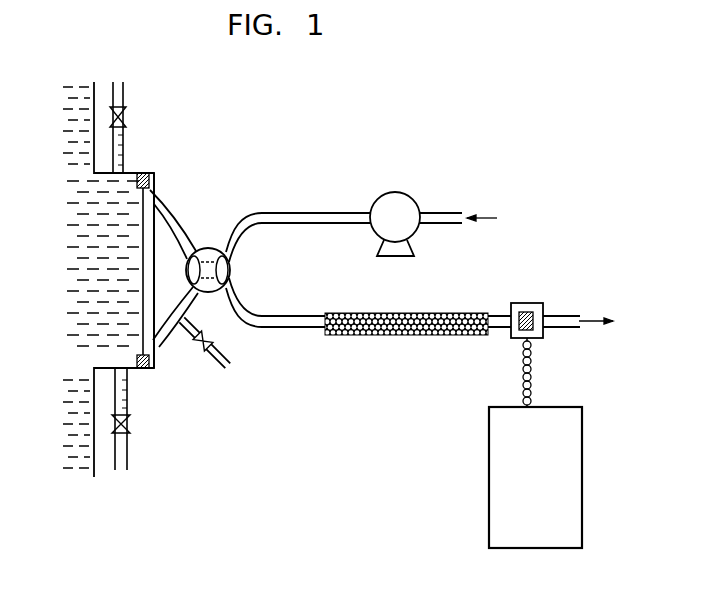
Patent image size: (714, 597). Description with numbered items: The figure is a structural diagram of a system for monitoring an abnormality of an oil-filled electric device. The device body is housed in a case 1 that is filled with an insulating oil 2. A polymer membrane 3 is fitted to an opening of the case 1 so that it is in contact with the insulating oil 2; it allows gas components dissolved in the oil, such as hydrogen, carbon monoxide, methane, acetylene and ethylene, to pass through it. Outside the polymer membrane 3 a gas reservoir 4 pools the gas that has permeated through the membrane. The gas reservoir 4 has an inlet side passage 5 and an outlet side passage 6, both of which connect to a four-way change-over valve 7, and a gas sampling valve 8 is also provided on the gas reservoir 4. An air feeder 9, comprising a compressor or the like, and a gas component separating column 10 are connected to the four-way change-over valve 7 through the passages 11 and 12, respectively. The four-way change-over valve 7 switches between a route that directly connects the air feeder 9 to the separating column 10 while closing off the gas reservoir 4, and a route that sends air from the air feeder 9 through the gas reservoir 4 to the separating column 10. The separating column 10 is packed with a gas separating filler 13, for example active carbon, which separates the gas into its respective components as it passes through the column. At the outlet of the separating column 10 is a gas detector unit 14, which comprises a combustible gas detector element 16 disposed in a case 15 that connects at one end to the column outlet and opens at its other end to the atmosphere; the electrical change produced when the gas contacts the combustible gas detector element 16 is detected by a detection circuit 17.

The case 1 is at (94, 92).
The insulating oil 2 is at (137, 363).
The polymer membrane 3 is at (147, 316).
The gas reservoir 4 is at (147, 202).
The inlet side passage 5 is at (176, 221).
The outlet side passage 6 is at (184, 307).
The four-way change-over valve 7 is at (212, 248).
The gas sampling valve 8 is at (197, 354).
The air feeder 9 is at (397, 192).
The gas component separating column 10 is at (375, 336).
The passage 11 is at (300, 212).
The passage 12 is at (304, 332).
The gas separating filler 13 is at (423, 336).
The gas detector unit 14 is at (511, 336).
The case 15 is at (535, 303).
The combustible gas detector element 16 is at (521, 304).
The detection circuit 17 is at (489, 431).